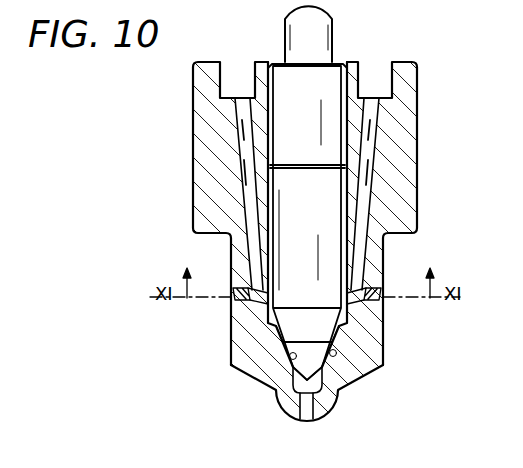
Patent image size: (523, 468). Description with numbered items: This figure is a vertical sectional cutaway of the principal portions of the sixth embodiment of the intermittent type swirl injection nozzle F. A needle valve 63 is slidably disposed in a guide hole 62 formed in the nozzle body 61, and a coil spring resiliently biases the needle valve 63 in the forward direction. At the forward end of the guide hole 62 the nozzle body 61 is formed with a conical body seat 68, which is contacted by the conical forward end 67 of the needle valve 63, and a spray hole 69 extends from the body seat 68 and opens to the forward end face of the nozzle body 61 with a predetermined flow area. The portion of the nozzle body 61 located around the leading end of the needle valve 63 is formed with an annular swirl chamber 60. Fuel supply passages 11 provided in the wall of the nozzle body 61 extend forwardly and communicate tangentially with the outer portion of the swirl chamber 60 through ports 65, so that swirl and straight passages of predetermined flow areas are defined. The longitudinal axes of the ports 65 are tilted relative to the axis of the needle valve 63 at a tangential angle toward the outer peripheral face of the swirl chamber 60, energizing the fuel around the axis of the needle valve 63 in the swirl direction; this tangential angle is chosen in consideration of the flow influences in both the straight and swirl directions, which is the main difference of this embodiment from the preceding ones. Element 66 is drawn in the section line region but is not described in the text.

The fuel supply passage 11 is at (245, 187).
The annular swirl chamber 60 is at (381, 352).
The nozzle body 61 is at (402, 113).
The guide hole 62 is at (344, 238).
The needle valve 63 is at (323, 203).
The port 65 is at (260, 300).
The seal ring 66 is at (233, 298).
The conical forward end 67 is at (332, 342).
The body seat 68 is at (290, 352).
The spray hole 69 is at (307, 418).
The intermittent type swirl injection nozzle F is at (425, 152).